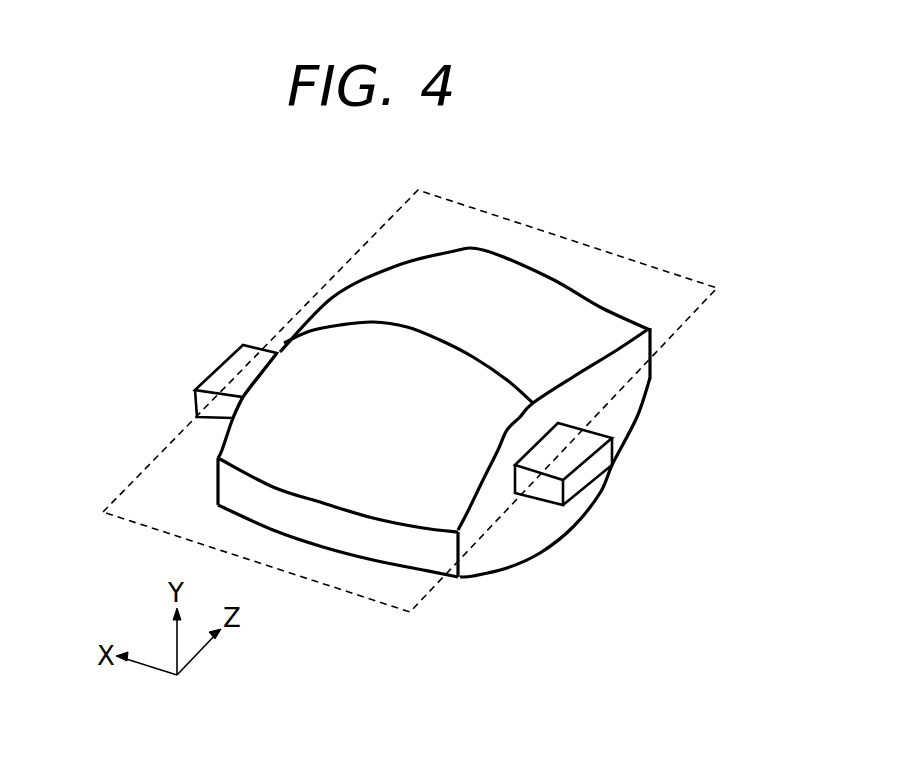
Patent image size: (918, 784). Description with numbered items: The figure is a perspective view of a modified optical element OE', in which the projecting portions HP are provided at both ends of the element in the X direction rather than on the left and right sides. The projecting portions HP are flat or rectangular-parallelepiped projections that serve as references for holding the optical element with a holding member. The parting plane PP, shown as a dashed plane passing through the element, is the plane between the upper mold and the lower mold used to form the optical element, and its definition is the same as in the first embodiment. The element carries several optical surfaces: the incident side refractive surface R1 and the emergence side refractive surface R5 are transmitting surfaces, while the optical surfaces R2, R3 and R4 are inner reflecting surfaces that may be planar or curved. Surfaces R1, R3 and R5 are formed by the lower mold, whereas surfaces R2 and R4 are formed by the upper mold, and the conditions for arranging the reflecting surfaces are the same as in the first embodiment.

The optical element OE' is at (486, 359).
The parting plane PP is at (143, 465).
The projecting portions HP is at (227, 367).
The incident side refractive surface R1 is at (546, 551).
The optical surface R2 is at (495, 313).
The optical surface R3 is at (601, 493).
The optical surface R4 is at (400, 437).
The emergence side refractive surface R5 is at (651, 367).